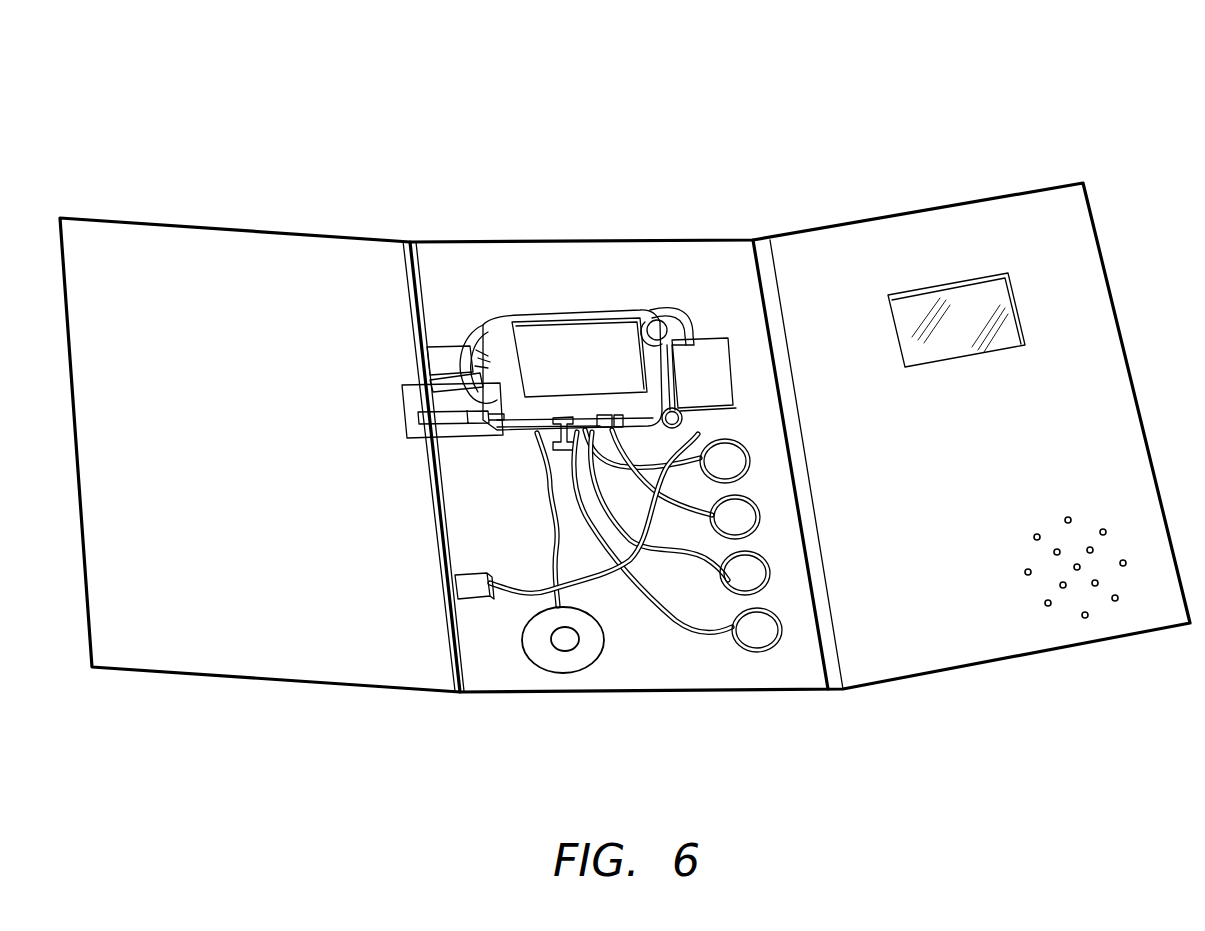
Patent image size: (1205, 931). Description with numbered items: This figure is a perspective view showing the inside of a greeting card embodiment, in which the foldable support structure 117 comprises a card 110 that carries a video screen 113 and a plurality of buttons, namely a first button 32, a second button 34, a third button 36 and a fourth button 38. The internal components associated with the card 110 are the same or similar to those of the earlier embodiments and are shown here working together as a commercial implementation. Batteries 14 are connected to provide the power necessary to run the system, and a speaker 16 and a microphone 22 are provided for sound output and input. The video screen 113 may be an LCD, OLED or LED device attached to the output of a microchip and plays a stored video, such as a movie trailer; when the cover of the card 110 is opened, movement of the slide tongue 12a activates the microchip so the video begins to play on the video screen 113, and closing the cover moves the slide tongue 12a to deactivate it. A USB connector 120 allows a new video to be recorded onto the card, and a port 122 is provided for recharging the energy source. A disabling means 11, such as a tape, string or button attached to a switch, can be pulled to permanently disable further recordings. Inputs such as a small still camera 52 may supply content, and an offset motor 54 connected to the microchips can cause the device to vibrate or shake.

The card 110 is at (884, 190).
The foldable support structure 117 is at (427, 245).
The batteries 14 is at (705, 330).
The video screen 113 is at (580, 367).
The microphone 22 is at (657, 320).
The USB connector 120 is at (448, 347).
The slide tongue 12a is at (440, 420).
The disabling means 11 is at (560, 420).
The small still camera 52 is at (673, 408).
The offset motor 54 is at (600, 428).
The port 122 is at (468, 597).
The first button 32 is at (740, 466).
The second button 34 is at (745, 523).
The third button 36 is at (755, 578).
The fourth button 38 is at (765, 632).
The speaker 16 is at (567, 662).